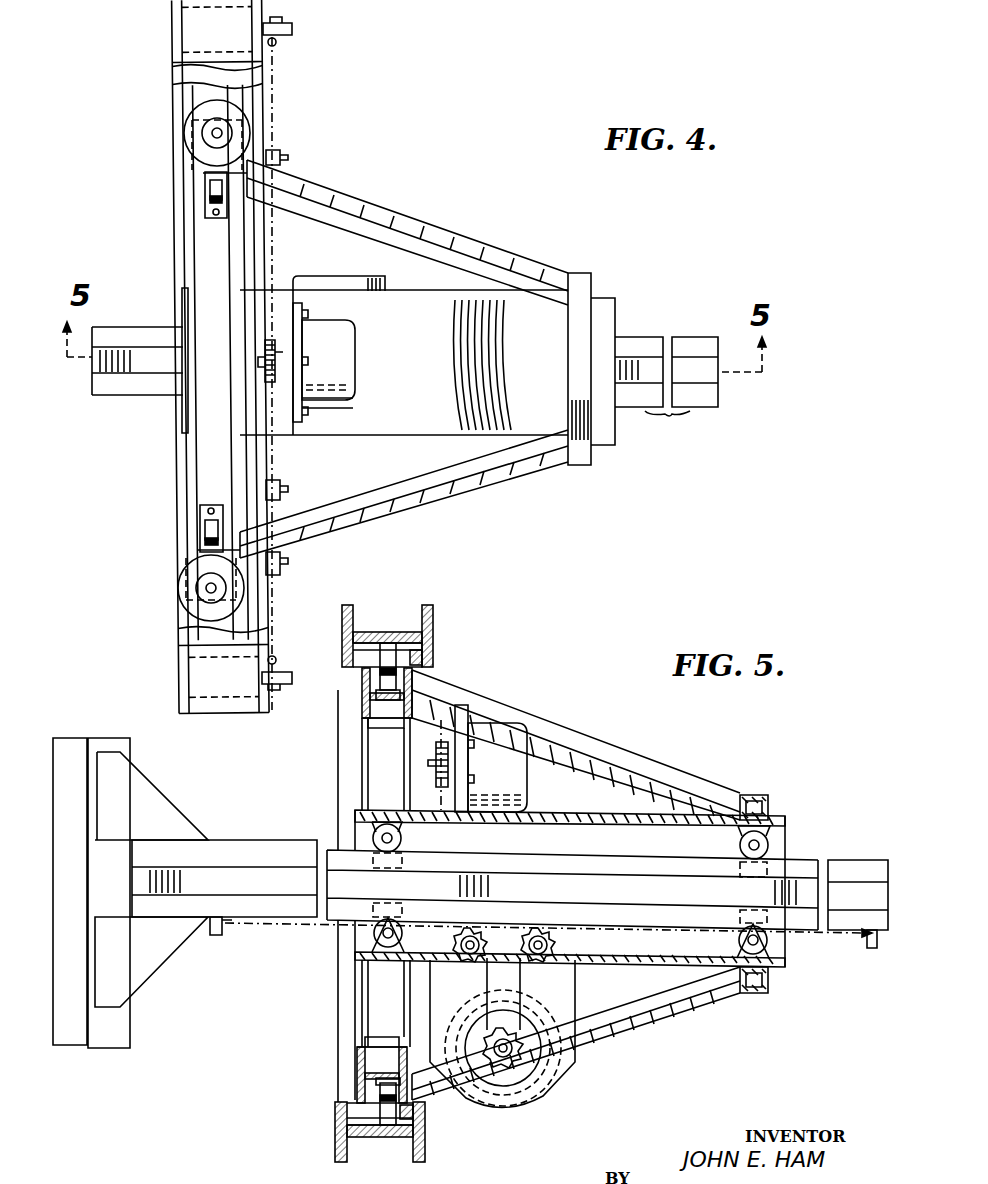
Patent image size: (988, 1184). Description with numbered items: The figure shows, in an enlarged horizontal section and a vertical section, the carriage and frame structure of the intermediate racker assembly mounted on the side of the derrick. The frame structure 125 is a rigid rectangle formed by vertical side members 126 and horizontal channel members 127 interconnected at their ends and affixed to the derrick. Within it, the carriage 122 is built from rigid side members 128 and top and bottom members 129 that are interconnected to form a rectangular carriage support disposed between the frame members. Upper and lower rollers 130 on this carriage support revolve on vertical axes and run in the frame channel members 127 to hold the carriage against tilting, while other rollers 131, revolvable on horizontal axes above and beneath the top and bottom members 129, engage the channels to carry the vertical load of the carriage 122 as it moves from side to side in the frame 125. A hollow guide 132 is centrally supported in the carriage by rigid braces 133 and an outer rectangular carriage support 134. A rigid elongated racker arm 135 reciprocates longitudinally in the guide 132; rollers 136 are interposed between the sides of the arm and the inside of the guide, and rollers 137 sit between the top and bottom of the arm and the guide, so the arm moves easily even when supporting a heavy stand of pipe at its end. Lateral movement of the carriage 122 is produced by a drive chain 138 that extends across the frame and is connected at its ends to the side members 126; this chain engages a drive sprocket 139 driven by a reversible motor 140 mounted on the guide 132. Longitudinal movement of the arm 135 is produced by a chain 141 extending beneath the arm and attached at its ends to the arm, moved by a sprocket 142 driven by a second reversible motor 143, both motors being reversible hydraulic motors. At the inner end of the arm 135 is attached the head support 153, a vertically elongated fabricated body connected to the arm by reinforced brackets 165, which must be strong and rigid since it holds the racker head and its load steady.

In FIG. 4, the carriage 122 is at (449, 359).
In FIG. 5, the carriage 122 is at (610, 885).
In FIG. 4, the frame structure 125 is at (172, 95).
In FIG. 5, the frame structure 125 is at (340, 1133).
In FIG. 4, the vertical side members 126 is at (193, 6).
In FIG. 5, the vertical side members 126 is at (347, 977).
In FIG. 4, the horizontal channel members 127 is at (176, 72).
In FIG. 5, the horizontal channel members 127 is at (434, 618).
In FIG. 4, the side members 128 is at (250, 118).
In FIG. 5, the side members 128 is at (384, 745).
In FIG. 4, the top and bottom members 129 is at (203, 462).
In FIG. 5, the top and bottom members 129 is at (365, 706).
In FIG. 4, the upper and lower rollers 130 is at (190, 128).
In FIG. 5, the upper and lower rollers 130 is at (424, 655).
In FIG. 4, the rollers 131 is at (212, 198).
In FIG. 5, the rollers 131 is at (393, 638).
In FIG. 4, the hollow guide 132 is at (400, 442).
In FIG. 5, the hollow guide 132 is at (543, 812).
In FIG. 4, the rigid braces 133 is at (424, 230).
In FIG. 5, the rigid braces 133 is at (617, 755).
In FIG. 4, the outer rectangular carriage support 134 is at (583, 452).
In FIG. 5, the outer rectangular carriage support 134 is at (757, 993).
In FIG. 4, the racker arm 135 is at (685, 341).
In FIG. 5, the racker arm 135 is at (254, 856).
In FIG. 5, the rollers 136 is at (385, 904).
In FIG. 5, the rollers 137 is at (401, 837).
In FIG. 4, the drive chain 138 is at (274, 248).
In FIG. 5, the drive chain 138 is at (446, 800).
In FIG. 4, the drive sprocket 139 is at (265, 374).
In FIG. 5, the drive sprocket 139 is at (442, 742).
In FIG. 4, the reversible motor 140 is at (346, 334).
In FIG. 5, the reversible motor 140 is at (522, 732).
In FIG. 5, the chain 141 is at (630, 930).
In FIG. 5, the sprocket 142 is at (508, 1063).
In FIG. 4, the reversible motor 143 is at (378, 283).
In FIG. 5, the reversible motor 143 is at (560, 1078).
In FIG. 5, the head support 153 is at (75, 1046).
In FIG. 5, the reinforced brackets 165 is at (180, 937).